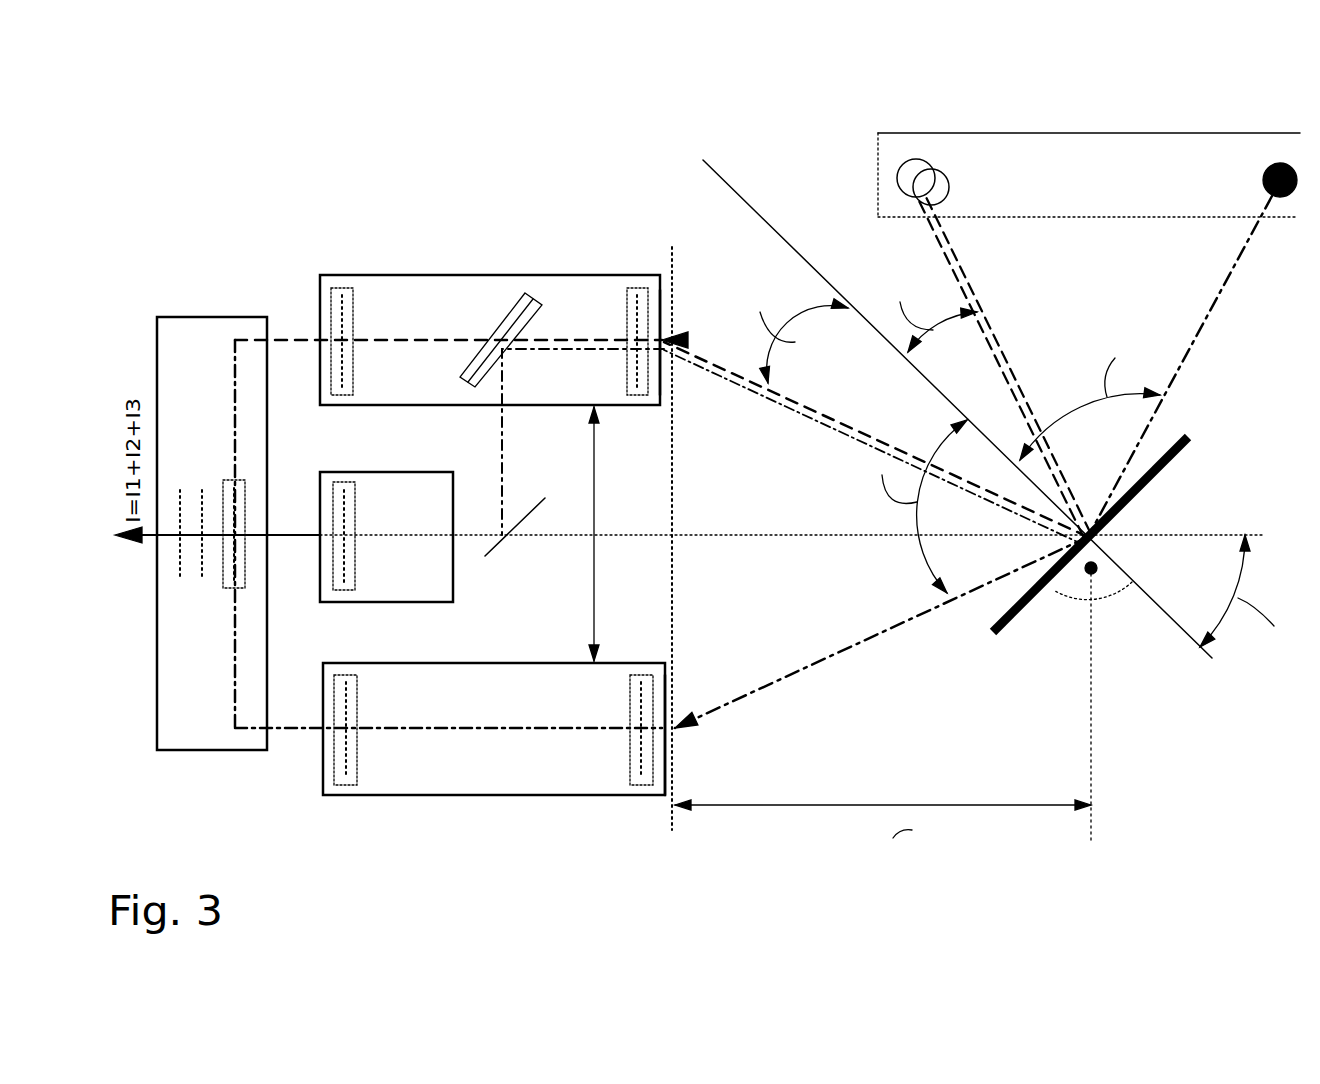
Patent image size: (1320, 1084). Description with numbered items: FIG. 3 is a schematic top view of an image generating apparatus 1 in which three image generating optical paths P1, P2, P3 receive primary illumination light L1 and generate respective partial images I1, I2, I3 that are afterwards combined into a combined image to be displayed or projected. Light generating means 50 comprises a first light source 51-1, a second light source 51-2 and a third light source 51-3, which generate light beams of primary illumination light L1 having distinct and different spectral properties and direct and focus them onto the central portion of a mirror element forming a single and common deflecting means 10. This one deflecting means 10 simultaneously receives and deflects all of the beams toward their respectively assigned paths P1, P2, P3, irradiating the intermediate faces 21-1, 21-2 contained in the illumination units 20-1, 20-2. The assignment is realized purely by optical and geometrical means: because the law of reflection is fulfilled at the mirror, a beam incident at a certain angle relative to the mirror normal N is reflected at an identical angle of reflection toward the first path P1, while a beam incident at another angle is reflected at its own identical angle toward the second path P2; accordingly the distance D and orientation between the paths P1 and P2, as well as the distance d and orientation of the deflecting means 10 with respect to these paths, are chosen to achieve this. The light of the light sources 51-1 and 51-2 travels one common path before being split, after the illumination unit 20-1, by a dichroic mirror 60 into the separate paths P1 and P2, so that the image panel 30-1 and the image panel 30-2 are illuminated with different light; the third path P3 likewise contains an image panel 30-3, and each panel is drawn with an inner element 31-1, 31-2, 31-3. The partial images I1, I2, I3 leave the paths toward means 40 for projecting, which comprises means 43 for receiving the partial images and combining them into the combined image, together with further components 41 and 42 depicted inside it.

The image generating apparatus 1 is at (232, 155).
The single and common deflecting means 10 is at (1160, 460).
The illumination unit 20-1 is at (660, 290).
The illumination unit 20-2 is at (650, 797).
The intermediate face 21-1 is at (602, 292).
The intermediate face 21-2 is at (640, 762).
The image panel 30-1 is at (340, 290).
The image panel 30-2 is at (343, 482).
The third detector 30-3 is at (337, 785).
The first detector sensing element 31-1 is at (345, 318).
The second detector sensing element 31-2 is at (347, 563).
The third detector sensing element 31-3 is at (350, 758).
The means for projecting 40 is at (185, 317).
The summing element S 41 is at (202, 490).
The signal lines 42 is at (180, 490).
The means for receiving and combining partial images 43 is at (230, 573).
The light generating means 50 is at (1010, 133).
The first light source 51-1 is at (897, 183).
The second light source 51-2 is at (938, 170).
The third light source 51-3 is at (1263, 180).
The dichroic mirror 60 is at (490, 300).
The first image generating optical path P1 is at (490, 340).
The second image generating optical path P2 is at (432, 537).
The third image generating optical path P3 is at (494, 729).
The first partial image I1 is at (282, 338).
The second partial image I2 is at (280, 537).
The third partial image I3 is at (285, 730).
The mirror normal N is at (738, 194).
The primary illumination light L1 is at (1215, 295).
The distance between image generating optical paths D is at (618, 534).
The distance of deflecting means d is at (883, 713).